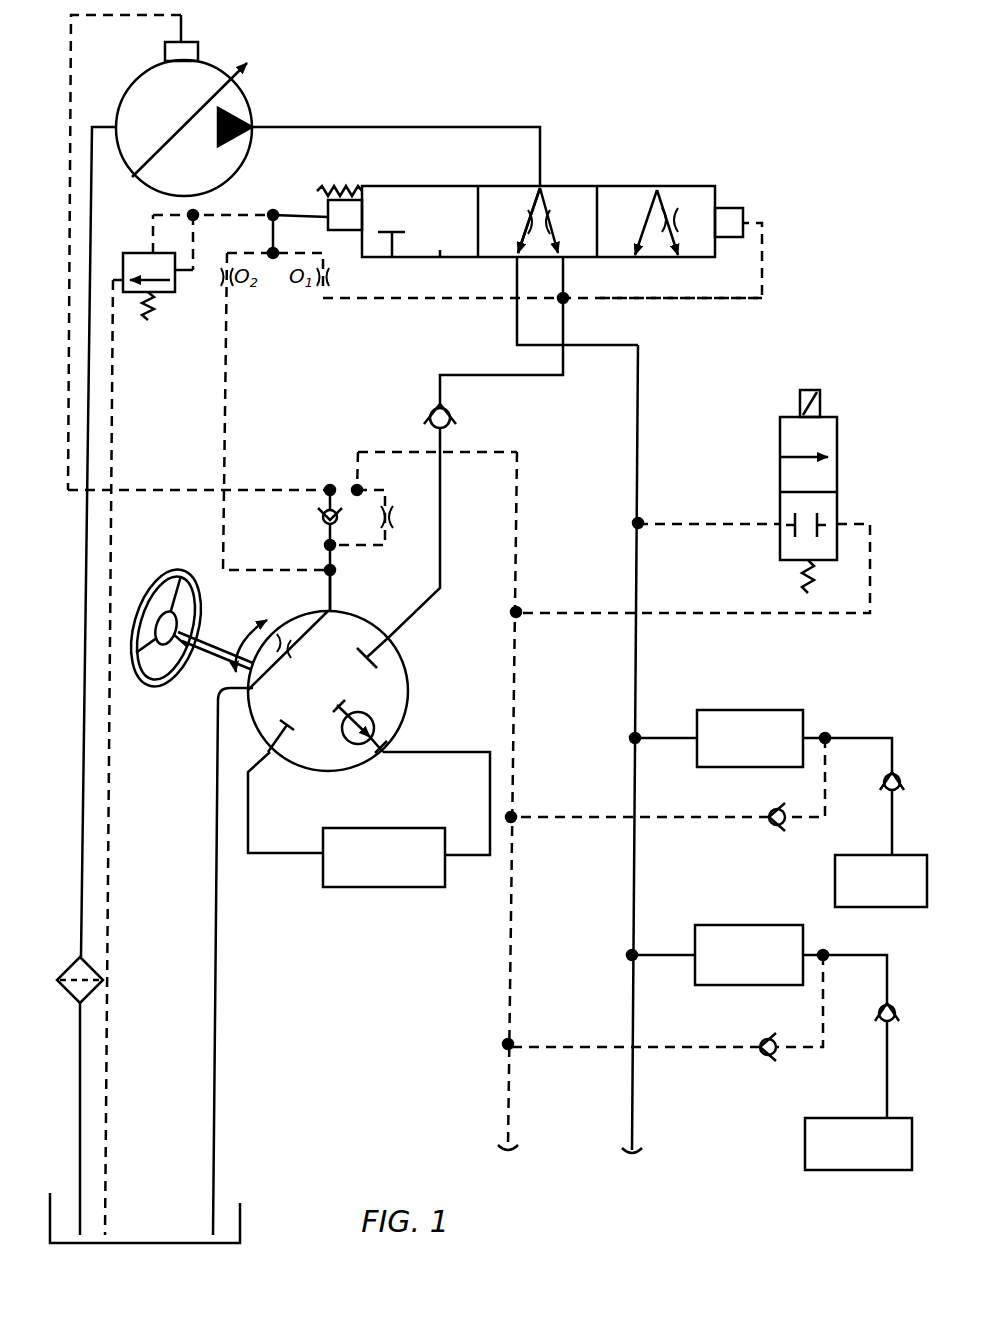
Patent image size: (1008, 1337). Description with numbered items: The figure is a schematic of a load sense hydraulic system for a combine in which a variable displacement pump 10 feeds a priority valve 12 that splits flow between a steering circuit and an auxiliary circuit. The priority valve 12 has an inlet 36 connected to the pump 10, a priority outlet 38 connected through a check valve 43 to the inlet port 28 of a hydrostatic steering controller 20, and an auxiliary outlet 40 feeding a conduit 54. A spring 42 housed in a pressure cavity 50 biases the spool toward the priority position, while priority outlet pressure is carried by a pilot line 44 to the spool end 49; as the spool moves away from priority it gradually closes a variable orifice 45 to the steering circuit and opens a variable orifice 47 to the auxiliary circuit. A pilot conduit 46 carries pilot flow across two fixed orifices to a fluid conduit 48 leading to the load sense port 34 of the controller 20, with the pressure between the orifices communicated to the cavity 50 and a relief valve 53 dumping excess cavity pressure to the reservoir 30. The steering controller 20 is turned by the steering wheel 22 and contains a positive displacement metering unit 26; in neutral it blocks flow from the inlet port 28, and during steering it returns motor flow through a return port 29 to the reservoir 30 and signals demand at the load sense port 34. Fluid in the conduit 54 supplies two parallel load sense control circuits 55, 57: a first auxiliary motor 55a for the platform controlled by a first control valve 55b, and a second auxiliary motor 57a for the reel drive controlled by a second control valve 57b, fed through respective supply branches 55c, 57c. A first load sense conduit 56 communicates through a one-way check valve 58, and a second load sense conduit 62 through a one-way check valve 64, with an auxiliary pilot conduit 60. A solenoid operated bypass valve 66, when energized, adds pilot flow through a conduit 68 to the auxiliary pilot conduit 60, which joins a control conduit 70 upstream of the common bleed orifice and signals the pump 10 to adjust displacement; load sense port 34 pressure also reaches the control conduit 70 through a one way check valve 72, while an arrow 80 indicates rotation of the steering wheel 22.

The pump 10 is at (262, 88).
The priority valve 12 is at (554, 188).
The steering controller 20 is at (368, 749).
The steering wheel 22 is at (163, 575).
The metering unit 26 is at (385, 712).
The inlet port 28 is at (398, 634).
The return port 29 is at (212, 697).
The reservoir 30 is at (225, 1212).
The load sense port 34 is at (338, 606).
The inlet 36 is at (440, 250).
The priority outlet 38 is at (446, 258).
The auxiliary outlet 40 is at (392, 258).
The spring 42 is at (345, 188).
The check valve 43 is at (451, 411).
The load sense pilot line 44 is at (672, 302).
The variable orifice 45 is at (557, 226).
The pilot conduit 46 is at (425, 300).
The variable orifice 47 is at (518, 222).
The fluid conduit 48 is at (228, 350).
The end of valve spool 49 is at (735, 208).
The pressure cavity 50 is at (338, 226).
The relief valve 53 is at (132, 250).
The conduit 54 is at (640, 372).
The load sense control circuit 55 is at (719, 768).
The first auxiliary motor 55a is at (880, 856).
The first control valve 55b is at (783, 706).
The auxiliary supply line (1) 55c is at (864, 738).
The first load sense conduit 56 is at (825, 794).
The load sense control circuit 57 is at (710, 1009).
The second auxiliary motor 57a is at (846, 1128).
The second control valve 57b is at (775, 922).
The auxiliary supply line (2) 57c is at (870, 955).
The one-way check valve 58 is at (770, 810).
The auxiliary pilot conduit 60 is at (518, 694).
The second load sense conduit 62 is at (823, 1013).
The one-way check valve 64 is at (762, 1040).
The bypass valve 66 is at (832, 403).
The conduit 68 is at (680, 602).
The control conduit 70 is at (384, 525).
The one way check valve 72 is at (322, 517).
The steering rotation arrow 80 is at (218, 637).